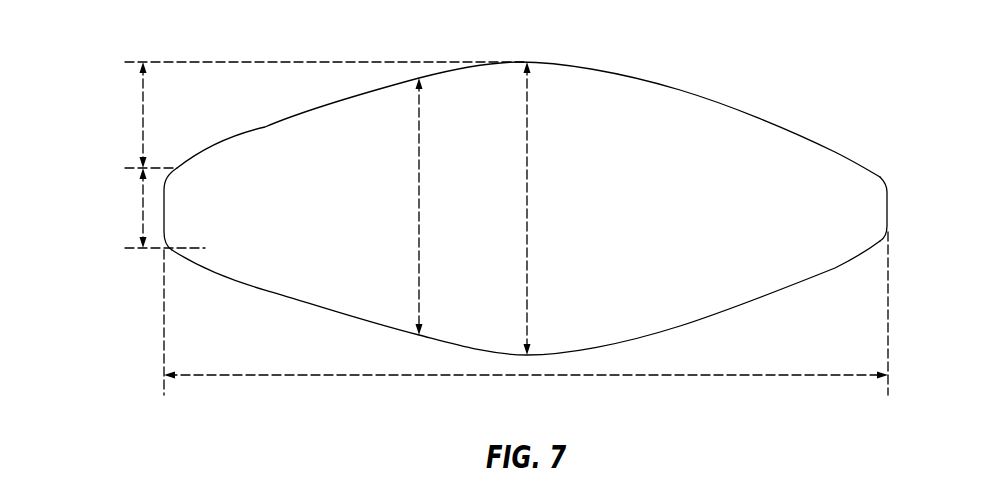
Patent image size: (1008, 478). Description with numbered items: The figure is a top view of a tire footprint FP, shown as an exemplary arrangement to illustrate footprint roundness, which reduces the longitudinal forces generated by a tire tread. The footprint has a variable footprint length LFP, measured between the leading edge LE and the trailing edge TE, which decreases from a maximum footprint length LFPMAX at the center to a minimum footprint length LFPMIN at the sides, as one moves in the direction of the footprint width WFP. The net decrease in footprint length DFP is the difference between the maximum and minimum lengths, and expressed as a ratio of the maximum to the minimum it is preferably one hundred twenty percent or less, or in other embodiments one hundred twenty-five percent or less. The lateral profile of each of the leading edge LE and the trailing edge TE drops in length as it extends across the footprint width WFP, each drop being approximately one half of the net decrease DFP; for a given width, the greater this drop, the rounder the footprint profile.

The tire footprint FP is at (528, 193).
The leading edge LE is at (265, 127).
The trailing edge TE is at (265, 290).
The net decrease in footprint length DFP is at (143, 122).
The minimum footprint length LFPMIN is at (143, 205).
The footprint length LFP is at (419, 213).
The maximum footprint length LFPMAX is at (527, 213).
The footprint width WFP is at (490, 376).